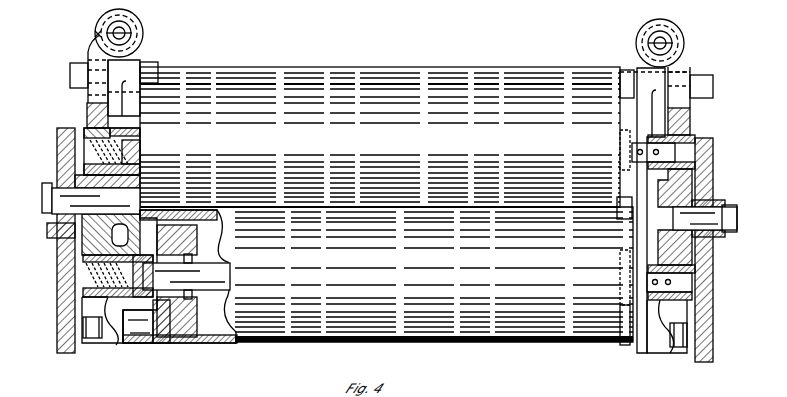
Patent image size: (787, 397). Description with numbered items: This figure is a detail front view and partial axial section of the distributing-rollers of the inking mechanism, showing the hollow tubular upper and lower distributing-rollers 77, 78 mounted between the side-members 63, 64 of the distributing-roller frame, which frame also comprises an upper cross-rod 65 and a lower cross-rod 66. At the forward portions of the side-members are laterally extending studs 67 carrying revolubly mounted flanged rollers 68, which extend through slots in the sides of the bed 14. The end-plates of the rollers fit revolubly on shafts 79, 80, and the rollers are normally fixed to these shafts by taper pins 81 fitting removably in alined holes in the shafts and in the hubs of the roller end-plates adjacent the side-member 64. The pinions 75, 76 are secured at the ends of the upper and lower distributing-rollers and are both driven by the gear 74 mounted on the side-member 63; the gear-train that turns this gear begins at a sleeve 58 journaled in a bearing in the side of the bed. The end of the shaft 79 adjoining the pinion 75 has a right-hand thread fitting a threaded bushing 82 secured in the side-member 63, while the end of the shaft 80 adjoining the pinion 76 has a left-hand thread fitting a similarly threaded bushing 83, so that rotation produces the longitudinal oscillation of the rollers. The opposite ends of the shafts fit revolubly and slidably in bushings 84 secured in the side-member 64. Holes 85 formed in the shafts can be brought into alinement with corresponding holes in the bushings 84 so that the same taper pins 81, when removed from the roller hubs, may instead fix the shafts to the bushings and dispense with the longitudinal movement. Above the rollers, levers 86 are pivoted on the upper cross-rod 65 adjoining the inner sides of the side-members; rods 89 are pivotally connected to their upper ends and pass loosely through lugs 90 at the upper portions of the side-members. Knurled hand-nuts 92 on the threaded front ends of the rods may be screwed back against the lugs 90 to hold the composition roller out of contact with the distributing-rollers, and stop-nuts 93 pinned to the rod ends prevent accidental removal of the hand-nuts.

The bed 14 is at (57, 290).
The sleeve 58 is at (50, 232).
The side-member 63 is at (88, 99).
The side-member 64 is at (690, 118).
The upper cross-rod 65 is at (70, 76).
The lower cross-rod 66 is at (136, 335).
The stud 67 is at (740, 192).
The flanged roller 68 is at (727, 236).
The gear 74 is at (168, 241).
The pinion 75 is at (138, 158).
The pinion 76 is at (170, 306).
The upper distributing-roller 77 is at (380, 137).
The lower distributing-roller 78 is at (434, 274).
The shaft 79 is at (675, 151).
The shaft 80 is at (215, 290).
The taper pin 81 is at (622, 130).
The threaded bushing 82 is at (87, 115).
The threaded bushing 83 is at (60, 300).
The bushing 84 is at (695, 139).
The hole 85 is at (632, 151).
The lever 86 is at (399, 206).
The rod 89 is at (132, 33).
The lug 90 is at (94, 33).
The hand-nut 92 is at (140, 22).
The stop-nut 93 is at (137, 44).